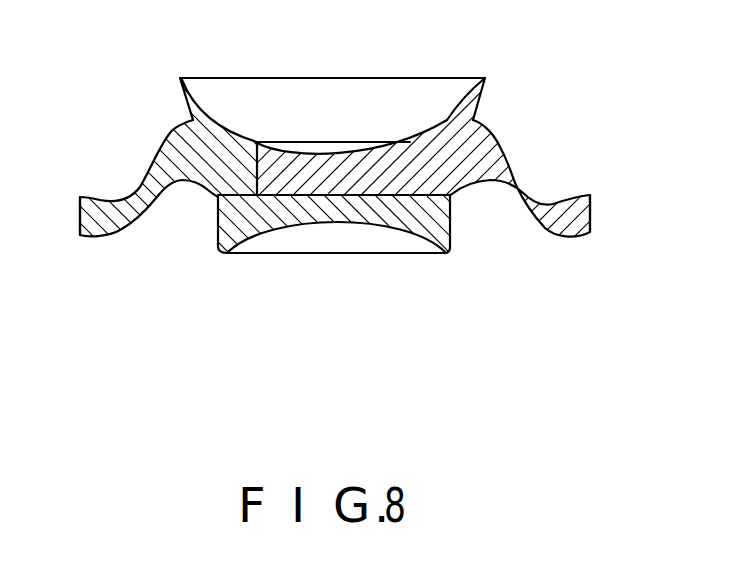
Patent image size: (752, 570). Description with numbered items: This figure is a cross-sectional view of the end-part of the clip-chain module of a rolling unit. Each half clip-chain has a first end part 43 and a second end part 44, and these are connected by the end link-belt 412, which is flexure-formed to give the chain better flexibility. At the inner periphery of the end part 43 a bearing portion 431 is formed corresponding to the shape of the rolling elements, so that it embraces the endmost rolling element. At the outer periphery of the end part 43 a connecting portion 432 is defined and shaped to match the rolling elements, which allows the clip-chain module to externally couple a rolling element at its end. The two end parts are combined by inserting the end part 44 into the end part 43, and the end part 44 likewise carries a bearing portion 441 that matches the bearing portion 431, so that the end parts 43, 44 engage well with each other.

The first end part 43 is at (430, 220).
The bearing portion 431 is at (237, 105).
The connecting portion 432 is at (320, 240).
The second end part 44 is at (267, 180).
The bearing portion 441 is at (337, 150).
The end link-belt 412 is at (97, 220).